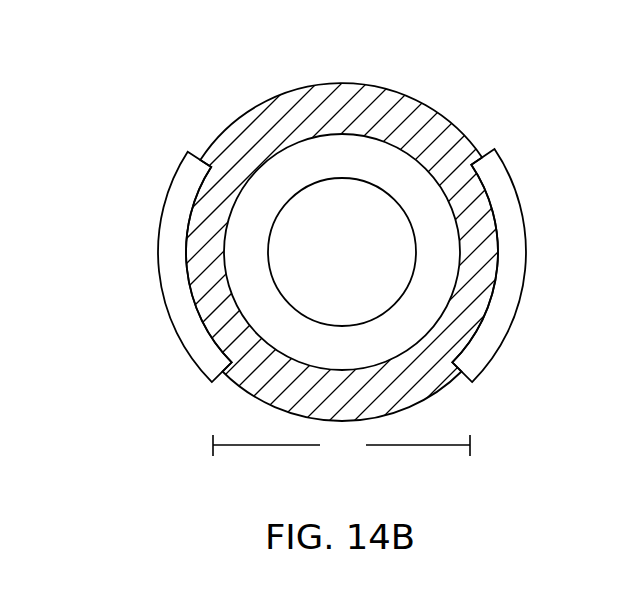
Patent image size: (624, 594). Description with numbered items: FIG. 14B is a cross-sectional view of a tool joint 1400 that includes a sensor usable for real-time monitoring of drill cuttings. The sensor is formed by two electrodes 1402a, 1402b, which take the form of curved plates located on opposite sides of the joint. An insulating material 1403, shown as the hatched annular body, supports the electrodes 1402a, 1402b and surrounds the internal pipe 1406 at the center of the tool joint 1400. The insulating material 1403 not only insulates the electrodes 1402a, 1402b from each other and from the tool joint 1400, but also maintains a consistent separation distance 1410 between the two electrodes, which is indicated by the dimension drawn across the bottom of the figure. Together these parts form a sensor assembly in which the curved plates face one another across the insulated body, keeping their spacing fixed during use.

The tool joint 1400 is at (120, 404).
The insulating material 1403 is at (330, 95).
The internal pipe 1406 is at (290, 177).
The electrode 1402a is at (503, 197).
The electrode 1402b is at (178, 193).
The separation distance 1410 is at (341, 446).